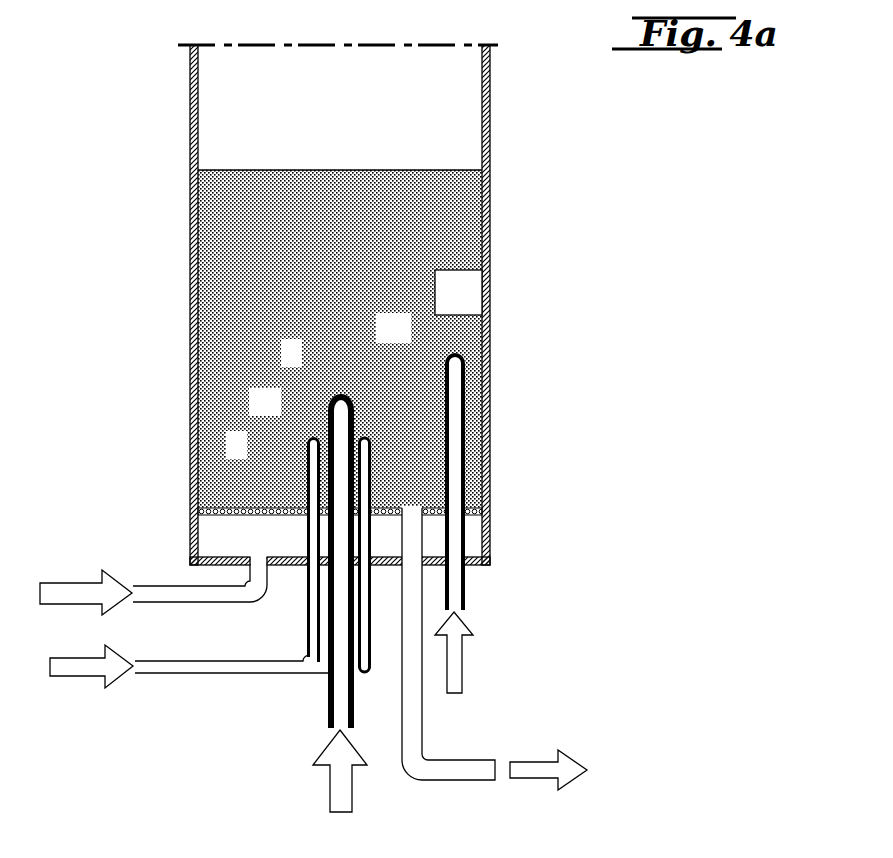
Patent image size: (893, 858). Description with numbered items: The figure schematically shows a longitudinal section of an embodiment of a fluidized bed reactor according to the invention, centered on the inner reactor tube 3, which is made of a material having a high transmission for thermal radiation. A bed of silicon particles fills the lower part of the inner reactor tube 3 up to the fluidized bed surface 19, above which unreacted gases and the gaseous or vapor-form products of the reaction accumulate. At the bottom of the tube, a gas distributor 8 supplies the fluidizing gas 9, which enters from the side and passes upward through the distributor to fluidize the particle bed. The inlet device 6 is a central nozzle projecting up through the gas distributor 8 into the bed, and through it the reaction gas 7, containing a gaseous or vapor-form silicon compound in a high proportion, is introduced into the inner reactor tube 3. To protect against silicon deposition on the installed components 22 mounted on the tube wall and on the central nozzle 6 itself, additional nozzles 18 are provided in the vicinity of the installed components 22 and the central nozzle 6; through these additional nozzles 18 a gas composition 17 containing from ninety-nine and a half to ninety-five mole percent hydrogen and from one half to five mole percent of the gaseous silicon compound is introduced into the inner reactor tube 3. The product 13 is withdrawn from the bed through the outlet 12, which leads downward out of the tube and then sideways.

The inner reactor tube 3 is at (491, 234).
The inlet device 6 is at (333, 400).
The reaction gas 7 is at (338, 792).
The gas distributor 8 is at (253, 508).
The fluidizing gas 9 is at (80, 593).
The outlet 12 is at (445, 769).
The product 13 is at (533, 770).
The gas composition 17 is at (67, 667).
The additional nozzles 18 is at (308, 444).
The fluidized bed surface 19 is at (463, 168).
The installed components 22 is at (460, 300).